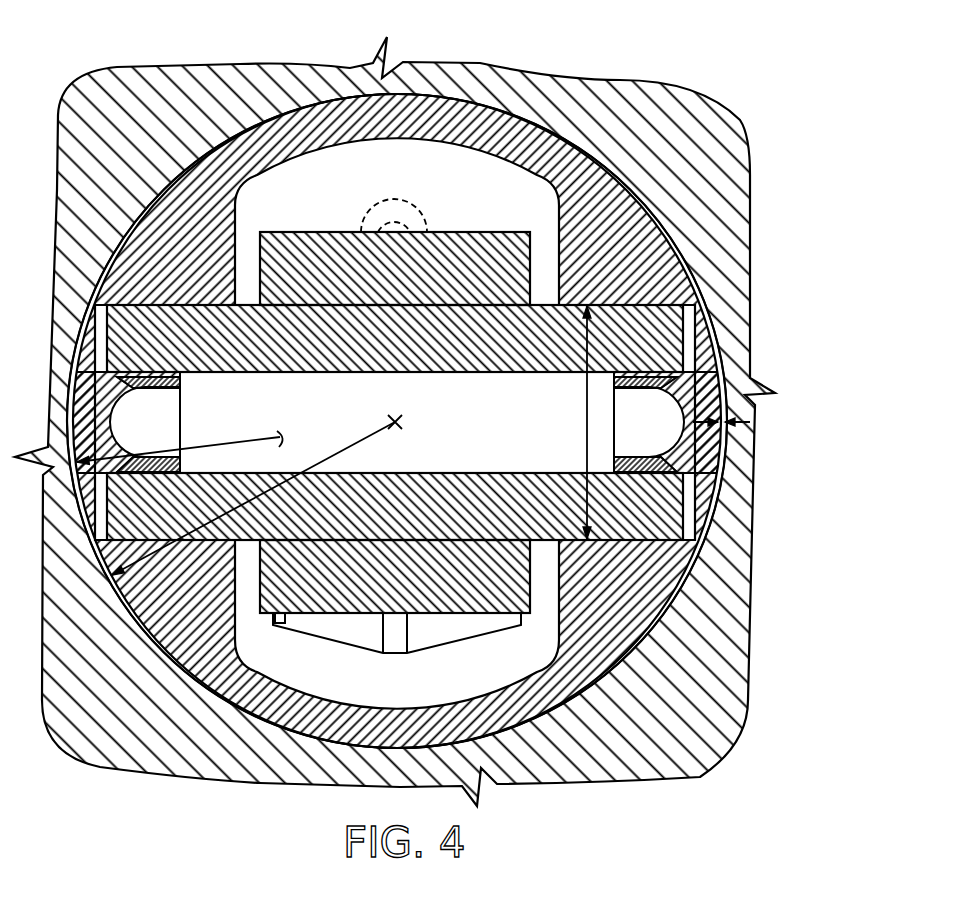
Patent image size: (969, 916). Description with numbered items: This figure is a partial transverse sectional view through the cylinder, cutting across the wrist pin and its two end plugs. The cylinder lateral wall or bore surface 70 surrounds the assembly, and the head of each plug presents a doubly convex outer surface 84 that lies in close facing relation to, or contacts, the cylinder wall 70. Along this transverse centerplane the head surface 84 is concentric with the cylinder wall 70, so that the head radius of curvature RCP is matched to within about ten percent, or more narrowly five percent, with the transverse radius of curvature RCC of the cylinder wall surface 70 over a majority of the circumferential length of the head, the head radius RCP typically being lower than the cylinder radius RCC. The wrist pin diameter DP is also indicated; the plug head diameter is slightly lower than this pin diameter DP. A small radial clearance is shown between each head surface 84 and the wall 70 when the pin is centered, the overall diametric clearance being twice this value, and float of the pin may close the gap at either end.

The cylinder wall surface 70 is at (645, 205).
The head outer surface 84 is at (720, 443).
The transverse radius of curvature of the cylinder wall surface RCC is at (361, 441).
The head radius of curvature RCP is at (246, 441).
The wrist pin diameter DP is at (587, 386).